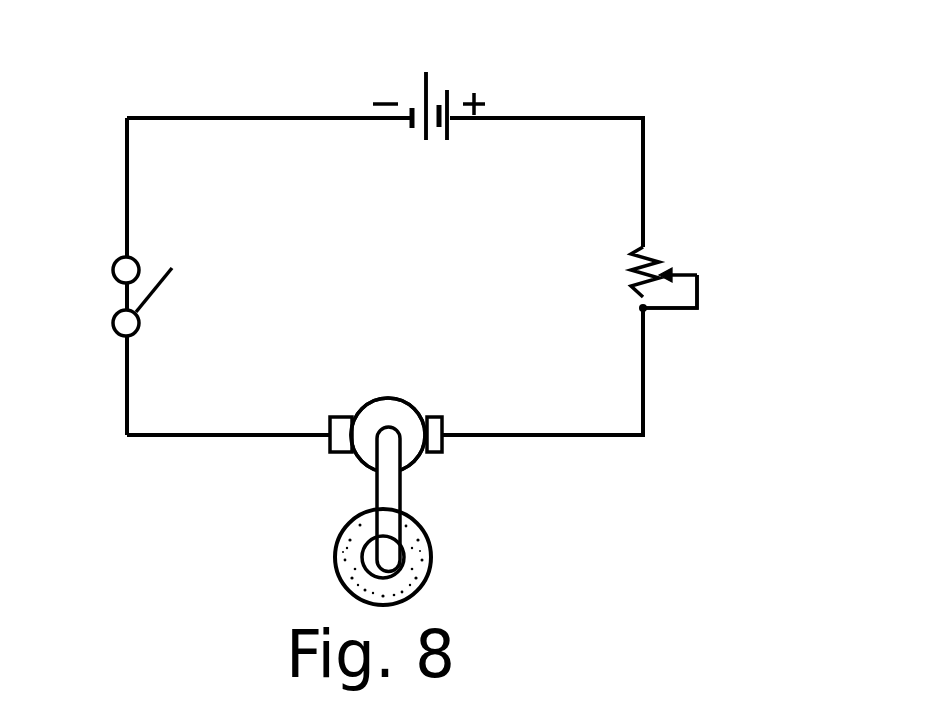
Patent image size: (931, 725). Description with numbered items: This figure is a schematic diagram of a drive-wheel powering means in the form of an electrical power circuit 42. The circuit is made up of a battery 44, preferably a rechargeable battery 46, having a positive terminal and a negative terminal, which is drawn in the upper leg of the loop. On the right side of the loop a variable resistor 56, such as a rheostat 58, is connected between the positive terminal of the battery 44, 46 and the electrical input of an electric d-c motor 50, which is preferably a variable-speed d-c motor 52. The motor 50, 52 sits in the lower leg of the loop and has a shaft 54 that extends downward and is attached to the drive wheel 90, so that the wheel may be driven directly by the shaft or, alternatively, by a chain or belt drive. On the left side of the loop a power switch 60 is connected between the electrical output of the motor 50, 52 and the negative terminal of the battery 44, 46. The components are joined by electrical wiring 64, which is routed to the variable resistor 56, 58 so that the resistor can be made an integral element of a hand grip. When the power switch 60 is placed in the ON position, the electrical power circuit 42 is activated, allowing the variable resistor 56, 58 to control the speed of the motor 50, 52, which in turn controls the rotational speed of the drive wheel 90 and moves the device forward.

The electrical power circuit 42 is at (287, 113).
The battery 44 is at (426, 76).
The rechargeable battery 46 is at (436, 106).
The electric d-c motor 50 is at (363, 458).
The variable-speed d-c motor 52 is at (388, 435).
The shaft 54 is at (383, 483).
The variable resistor 56 is at (699, 293).
The rheostat 58 is at (670, 291).
The power switch 60 is at (114, 276).
The electrical wiring 64 is at (587, 110).
The drive wheel 90 is at (432, 568).